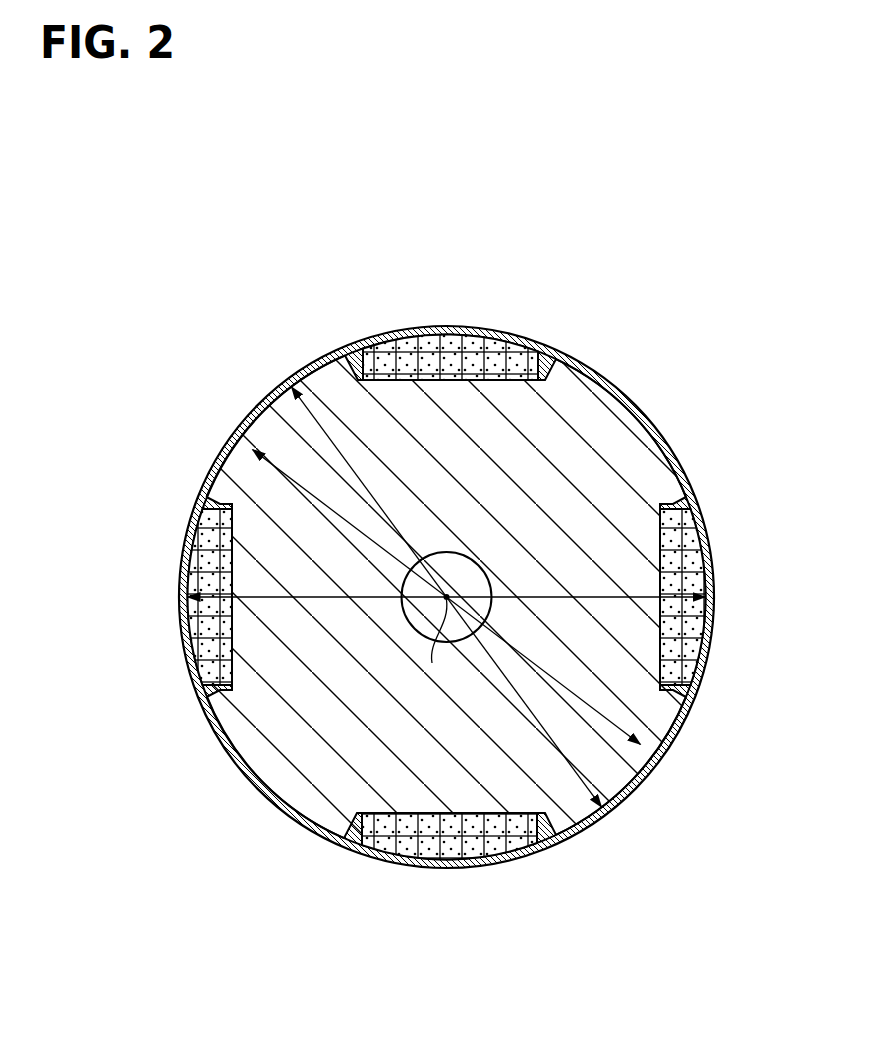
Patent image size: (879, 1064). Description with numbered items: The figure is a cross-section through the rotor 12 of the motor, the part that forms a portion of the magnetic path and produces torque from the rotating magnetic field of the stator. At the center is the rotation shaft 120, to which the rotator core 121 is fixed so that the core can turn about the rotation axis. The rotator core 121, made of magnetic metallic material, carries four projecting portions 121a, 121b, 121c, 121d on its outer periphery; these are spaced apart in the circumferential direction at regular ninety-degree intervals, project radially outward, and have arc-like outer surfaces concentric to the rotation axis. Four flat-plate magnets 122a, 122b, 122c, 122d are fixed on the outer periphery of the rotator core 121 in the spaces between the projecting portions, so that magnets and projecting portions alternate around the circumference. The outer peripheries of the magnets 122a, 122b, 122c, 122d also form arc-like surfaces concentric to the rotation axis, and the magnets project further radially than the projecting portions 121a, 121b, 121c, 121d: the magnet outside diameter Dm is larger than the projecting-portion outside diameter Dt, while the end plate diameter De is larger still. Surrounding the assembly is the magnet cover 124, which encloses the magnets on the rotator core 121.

The rotor 12 is at (456, 574).
The rotation shaft 120 is at (463, 573).
The rotator core 121 is at (466, 590).
The projecting portion 121a is at (633, 408).
The projecting portion 121b is at (617, 763).
The projecting portion 121c is at (273, 762).
The projecting portion 121d is at (268, 432).
The magnet 122a is at (467, 342).
The magnet 122b is at (687, 635).
The magnet 122c is at (447, 845).
The magnet 122d is at (200, 550).
The magnet cover 124 is at (693, 485).